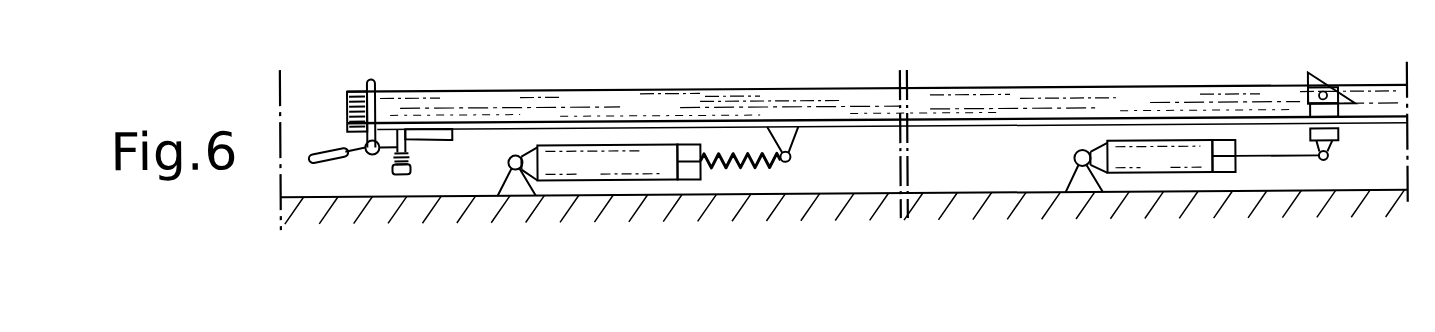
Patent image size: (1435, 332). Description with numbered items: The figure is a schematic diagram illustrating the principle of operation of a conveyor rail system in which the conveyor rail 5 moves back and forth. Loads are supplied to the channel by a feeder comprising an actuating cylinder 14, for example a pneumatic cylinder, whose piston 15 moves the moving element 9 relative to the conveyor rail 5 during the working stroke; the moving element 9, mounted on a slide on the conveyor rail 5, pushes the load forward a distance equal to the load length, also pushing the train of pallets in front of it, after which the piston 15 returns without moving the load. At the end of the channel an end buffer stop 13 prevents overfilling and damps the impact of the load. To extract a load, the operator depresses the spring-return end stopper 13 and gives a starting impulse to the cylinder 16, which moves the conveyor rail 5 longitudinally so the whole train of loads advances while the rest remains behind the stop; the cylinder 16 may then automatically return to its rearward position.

The conveyor rail 5 is at (843, 92).
The end buffer stop 13 is at (372, 80).
The cylinder 16 is at (652, 175).
The actuating cylinder 14 is at (1168, 171).
The moving element 9 is at (1306, 89).
The piston 15 is at (1294, 164).